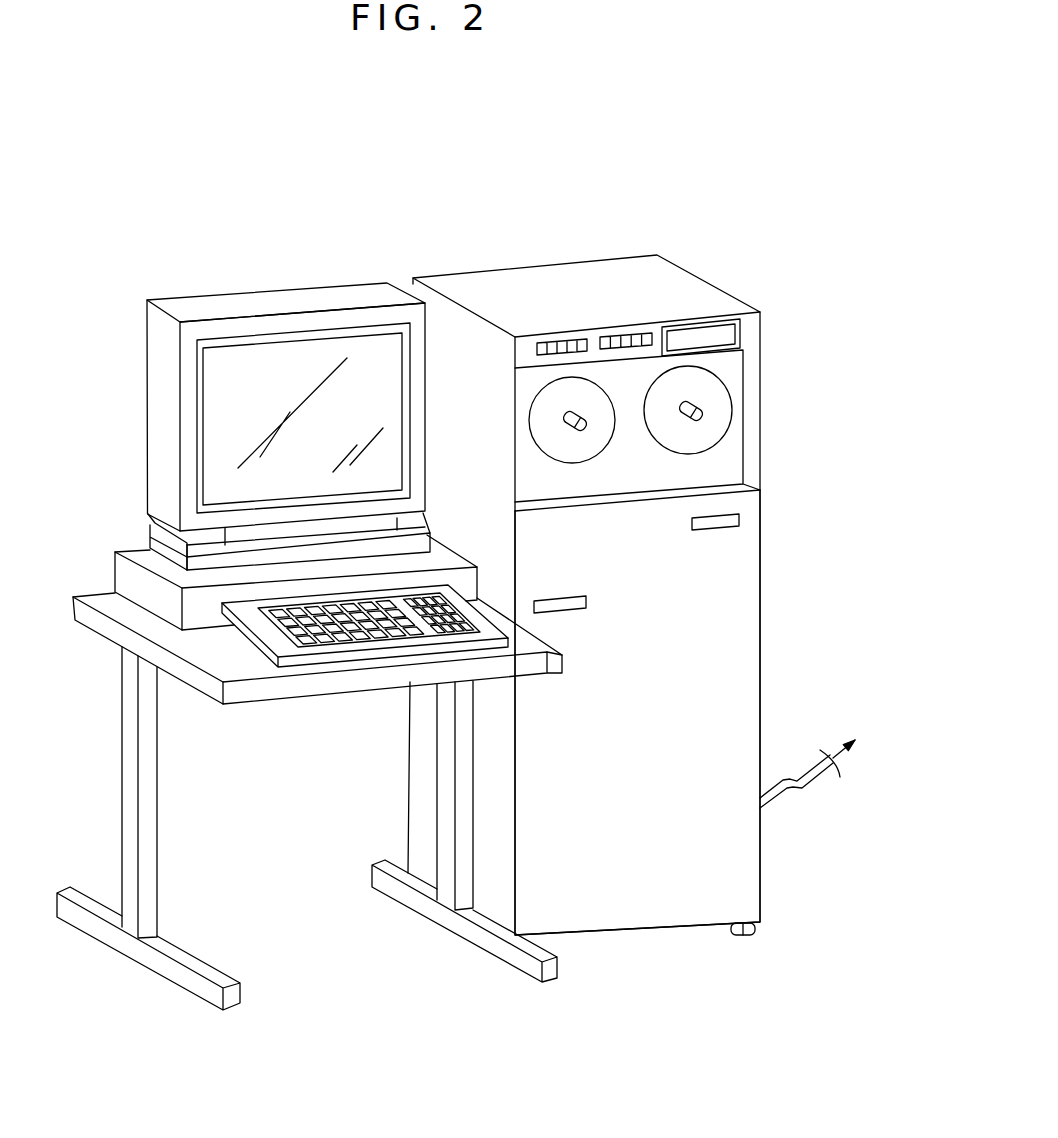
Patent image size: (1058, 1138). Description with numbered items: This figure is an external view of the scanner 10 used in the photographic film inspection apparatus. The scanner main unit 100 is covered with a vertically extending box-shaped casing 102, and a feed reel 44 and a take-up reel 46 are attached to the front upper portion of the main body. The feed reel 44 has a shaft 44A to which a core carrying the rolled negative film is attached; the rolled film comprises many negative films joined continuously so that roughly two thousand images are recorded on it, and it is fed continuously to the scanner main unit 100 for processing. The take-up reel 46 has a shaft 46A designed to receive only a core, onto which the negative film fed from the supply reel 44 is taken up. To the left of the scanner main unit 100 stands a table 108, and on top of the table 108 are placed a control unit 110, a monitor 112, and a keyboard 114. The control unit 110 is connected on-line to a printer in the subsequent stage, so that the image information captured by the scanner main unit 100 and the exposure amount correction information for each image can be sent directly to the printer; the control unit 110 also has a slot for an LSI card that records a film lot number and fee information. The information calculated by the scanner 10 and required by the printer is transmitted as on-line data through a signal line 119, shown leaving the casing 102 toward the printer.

The scanner 10 is at (430, 202).
The scanner main unit 100 is at (680, 258).
The casing 102 is at (760, 555).
The table 108 is at (112, 593).
The control unit 110 is at (128, 553).
The monitor 112 is at (215, 381).
The keyboard 114 is at (343, 647).
The signal line 119 is at (810, 786).
The feed reel 44 is at (567, 457).
The shaft of the supply reel 44A is at (587, 430).
The take-up reel 46 is at (725, 393).
The shaft of the take-up reel 46A is at (703, 420).